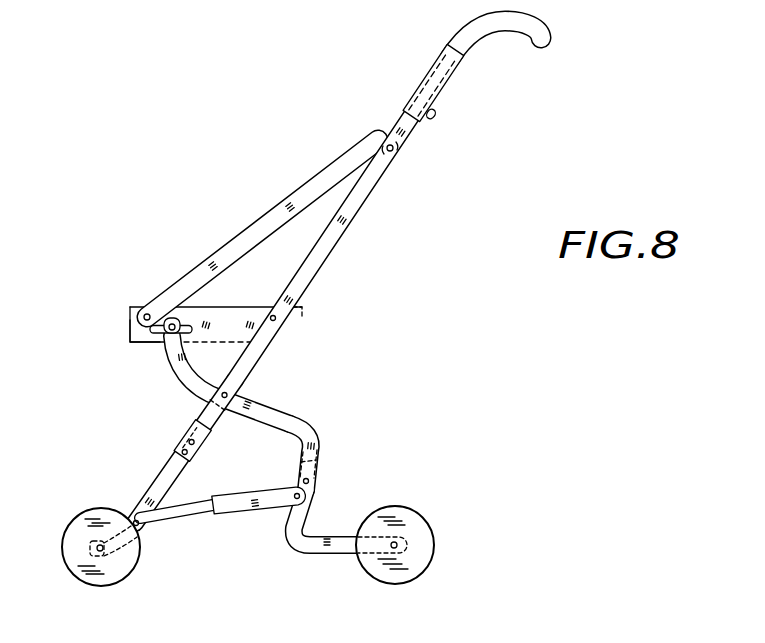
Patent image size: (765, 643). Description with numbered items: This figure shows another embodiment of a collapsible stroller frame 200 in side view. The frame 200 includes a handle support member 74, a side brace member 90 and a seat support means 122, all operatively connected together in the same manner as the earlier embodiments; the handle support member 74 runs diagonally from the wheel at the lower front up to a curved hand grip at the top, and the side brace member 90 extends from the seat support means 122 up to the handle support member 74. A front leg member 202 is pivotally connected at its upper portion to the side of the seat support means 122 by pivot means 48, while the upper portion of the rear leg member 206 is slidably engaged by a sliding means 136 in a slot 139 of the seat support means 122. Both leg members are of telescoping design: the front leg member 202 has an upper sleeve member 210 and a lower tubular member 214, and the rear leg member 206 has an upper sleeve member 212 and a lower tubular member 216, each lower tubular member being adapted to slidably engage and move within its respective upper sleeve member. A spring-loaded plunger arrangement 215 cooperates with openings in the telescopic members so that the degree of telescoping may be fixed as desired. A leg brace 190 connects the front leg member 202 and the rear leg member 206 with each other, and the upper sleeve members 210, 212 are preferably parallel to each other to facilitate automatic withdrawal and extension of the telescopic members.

The frame 200 is at (100, 313).
The handle support member 74 is at (363, 199).
The side brace member 90 is at (320, 181).
The sliding means 136 is at (180, 323).
The slot 139 is at (158, 337).
The seat support means 122 is at (130, 340).
The pivot means 48 is at (277, 318).
The upper sleeve member 210 is at (212, 407).
The upper sleeve member 212 is at (322, 433).
The spring-loaded plunger arrangement 215 is at (313, 484).
The rear leg member 206 is at (313, 497).
The front leg member 202 is at (158, 492).
The lower tubular member 214 is at (168, 491).
The leg brace 190 is at (206, 518).
The lower tubular member 216 is at (308, 551).